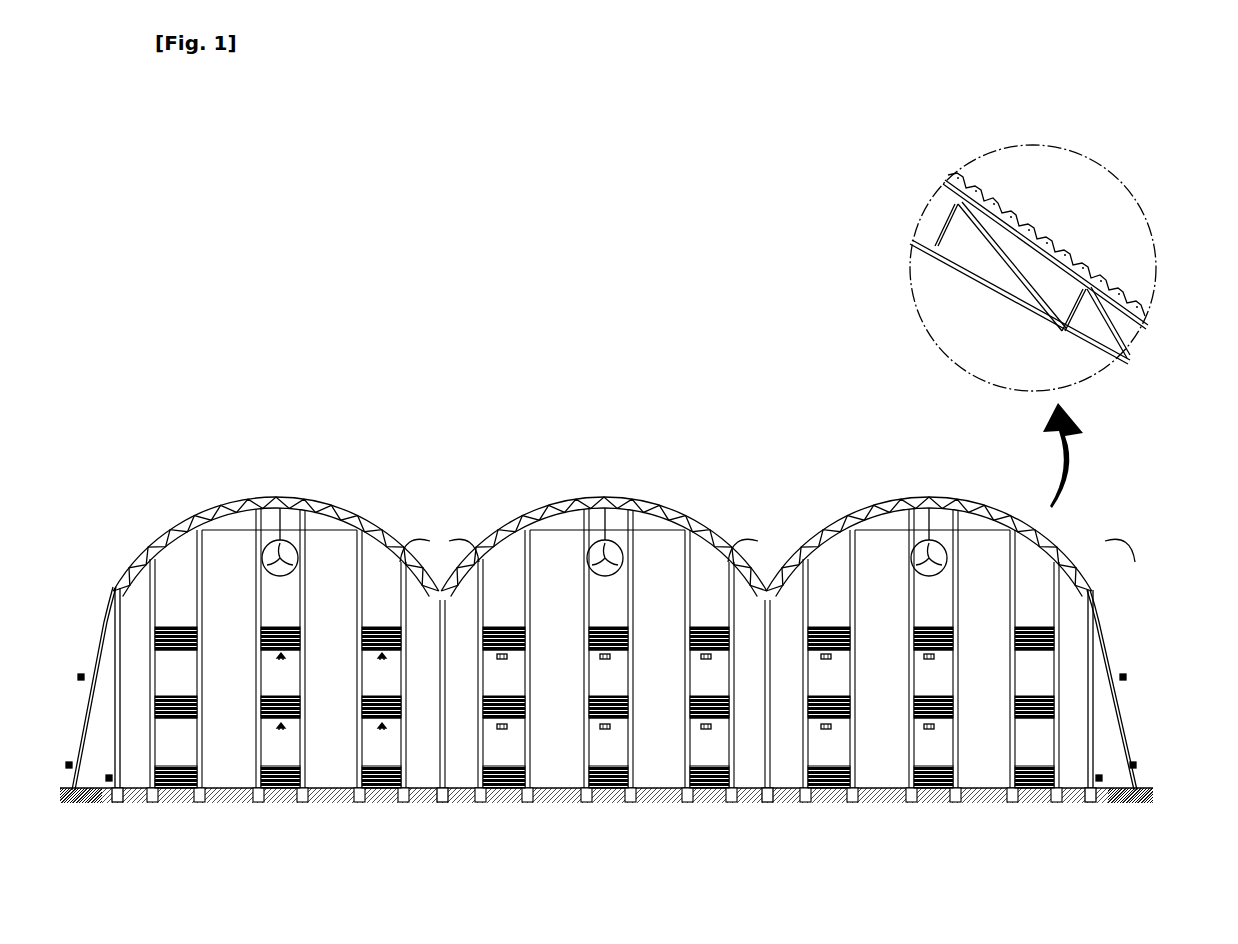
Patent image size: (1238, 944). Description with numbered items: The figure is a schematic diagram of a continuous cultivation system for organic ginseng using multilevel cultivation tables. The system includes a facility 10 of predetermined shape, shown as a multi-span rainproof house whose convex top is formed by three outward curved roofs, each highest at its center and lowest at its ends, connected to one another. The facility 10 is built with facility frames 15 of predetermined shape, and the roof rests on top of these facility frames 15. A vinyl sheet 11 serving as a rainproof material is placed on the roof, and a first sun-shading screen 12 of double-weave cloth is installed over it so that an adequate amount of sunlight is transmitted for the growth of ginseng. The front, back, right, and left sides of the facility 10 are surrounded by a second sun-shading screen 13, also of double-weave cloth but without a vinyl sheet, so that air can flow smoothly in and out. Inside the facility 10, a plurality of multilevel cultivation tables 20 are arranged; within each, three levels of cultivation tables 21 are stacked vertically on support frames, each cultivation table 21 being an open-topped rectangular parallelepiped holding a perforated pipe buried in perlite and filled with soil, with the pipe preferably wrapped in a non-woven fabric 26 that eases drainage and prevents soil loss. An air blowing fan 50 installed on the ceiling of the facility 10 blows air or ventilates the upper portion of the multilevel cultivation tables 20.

The facility 10 is at (682, 508).
The vinyl sheet 11 is at (1086, 262).
The first sun-shading screen 12 is at (1044, 228).
The second sun-shading screen 13 is at (1133, 722).
The facility frames 15 is at (1094, 655).
The multilevel cultivation table 20 is at (740, 718).
The cultivation table 21 is at (600, 722).
The non-woven fabric 26 is at (380, 664).
The air blowing fan 50 is at (594, 544).